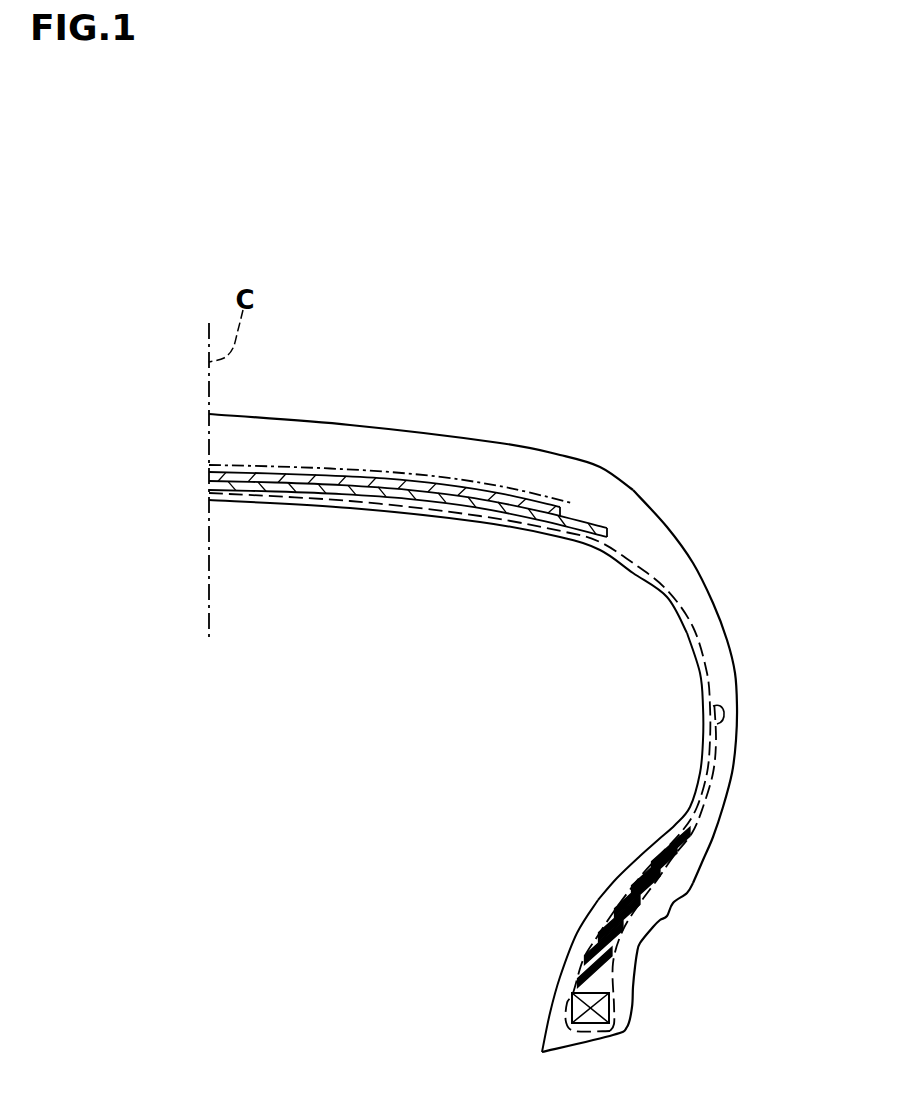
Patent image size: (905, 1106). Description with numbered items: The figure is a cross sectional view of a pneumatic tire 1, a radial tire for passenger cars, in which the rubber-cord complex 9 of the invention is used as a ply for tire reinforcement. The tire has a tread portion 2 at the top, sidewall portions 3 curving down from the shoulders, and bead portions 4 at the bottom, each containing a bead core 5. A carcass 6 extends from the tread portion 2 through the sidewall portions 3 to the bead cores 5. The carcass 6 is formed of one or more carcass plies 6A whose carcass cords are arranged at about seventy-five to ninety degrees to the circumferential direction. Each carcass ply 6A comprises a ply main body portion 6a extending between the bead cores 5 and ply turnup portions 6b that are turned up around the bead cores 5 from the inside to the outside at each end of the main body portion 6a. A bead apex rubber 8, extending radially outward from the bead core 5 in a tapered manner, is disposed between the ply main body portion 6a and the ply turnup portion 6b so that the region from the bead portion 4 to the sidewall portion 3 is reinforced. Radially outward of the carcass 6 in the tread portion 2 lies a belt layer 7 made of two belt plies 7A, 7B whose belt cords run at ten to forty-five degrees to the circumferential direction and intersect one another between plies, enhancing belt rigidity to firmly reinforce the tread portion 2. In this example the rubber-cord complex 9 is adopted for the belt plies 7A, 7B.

The pneumatic tire 1 is at (677, 508).
The tread portion 2 is at (519, 430).
The sidewall portion 3 is at (741, 650).
The bead portion 4 is at (555, 932).
The bead core 5 is at (574, 1006).
The carcass 6 is at (558, 680).
The carcass ply 6A is at (466, 762).
The ply main body portion 6a is at (703, 673).
The ply turnup portion 6b is at (706, 708).
The belt layer 7 is at (268, 337).
The belt ply 7A is at (353, 490).
The belt ply 7B is at (297, 473).
The bead apex rubber 8 is at (626, 902).
The rubber-cord complex 9 is at (408, 432).